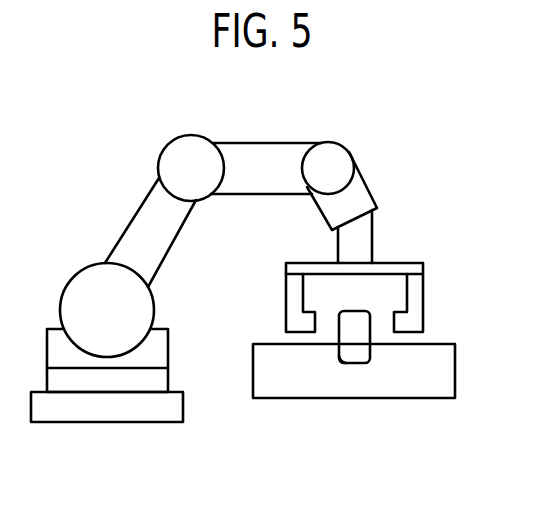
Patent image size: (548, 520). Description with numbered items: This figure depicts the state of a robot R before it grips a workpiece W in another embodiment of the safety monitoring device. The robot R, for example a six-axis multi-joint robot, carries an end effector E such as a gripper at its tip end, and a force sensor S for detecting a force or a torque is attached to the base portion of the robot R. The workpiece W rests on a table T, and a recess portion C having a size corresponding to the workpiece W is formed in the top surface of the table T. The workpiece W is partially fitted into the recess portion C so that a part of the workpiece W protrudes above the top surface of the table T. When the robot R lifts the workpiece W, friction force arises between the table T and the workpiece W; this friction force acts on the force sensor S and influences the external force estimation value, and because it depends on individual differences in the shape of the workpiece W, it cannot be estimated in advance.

The robot R is at (145, 230).
The end effector E is at (413, 293).
The workpiece W is at (355, 328).
The recess portion C is at (352, 355).
The table T is at (413, 378).
The force sensor S is at (143, 410).